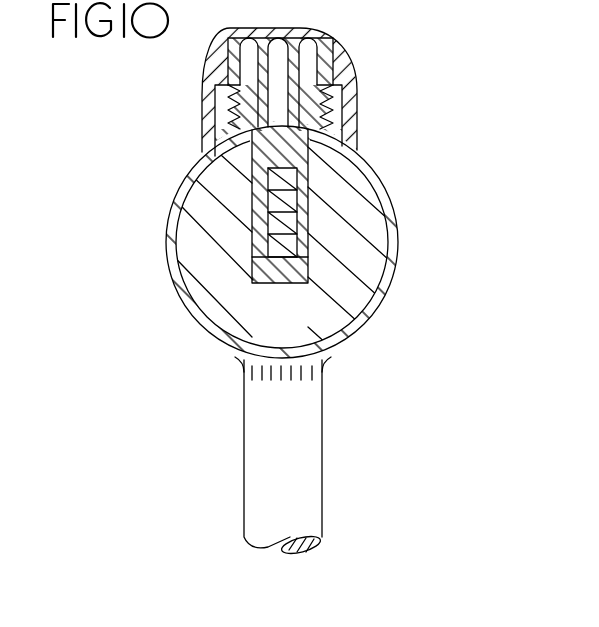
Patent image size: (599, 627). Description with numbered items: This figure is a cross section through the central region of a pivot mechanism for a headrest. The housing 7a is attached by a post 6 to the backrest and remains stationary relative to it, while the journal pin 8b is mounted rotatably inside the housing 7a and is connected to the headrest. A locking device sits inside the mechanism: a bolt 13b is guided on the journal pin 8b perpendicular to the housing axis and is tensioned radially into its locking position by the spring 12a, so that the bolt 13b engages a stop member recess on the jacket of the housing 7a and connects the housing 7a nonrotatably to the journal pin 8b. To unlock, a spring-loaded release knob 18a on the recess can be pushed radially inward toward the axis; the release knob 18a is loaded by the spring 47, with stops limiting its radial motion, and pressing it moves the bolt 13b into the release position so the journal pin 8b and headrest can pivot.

The release knob 18a is at (323, 40).
The spring 47 is at (224, 95).
The bolt 13b is at (267, 157).
The housing 7a is at (360, 158).
The spring 12a is at (292, 272).
The journal pin 8b is at (217, 308).
The post 6 is at (307, 445).